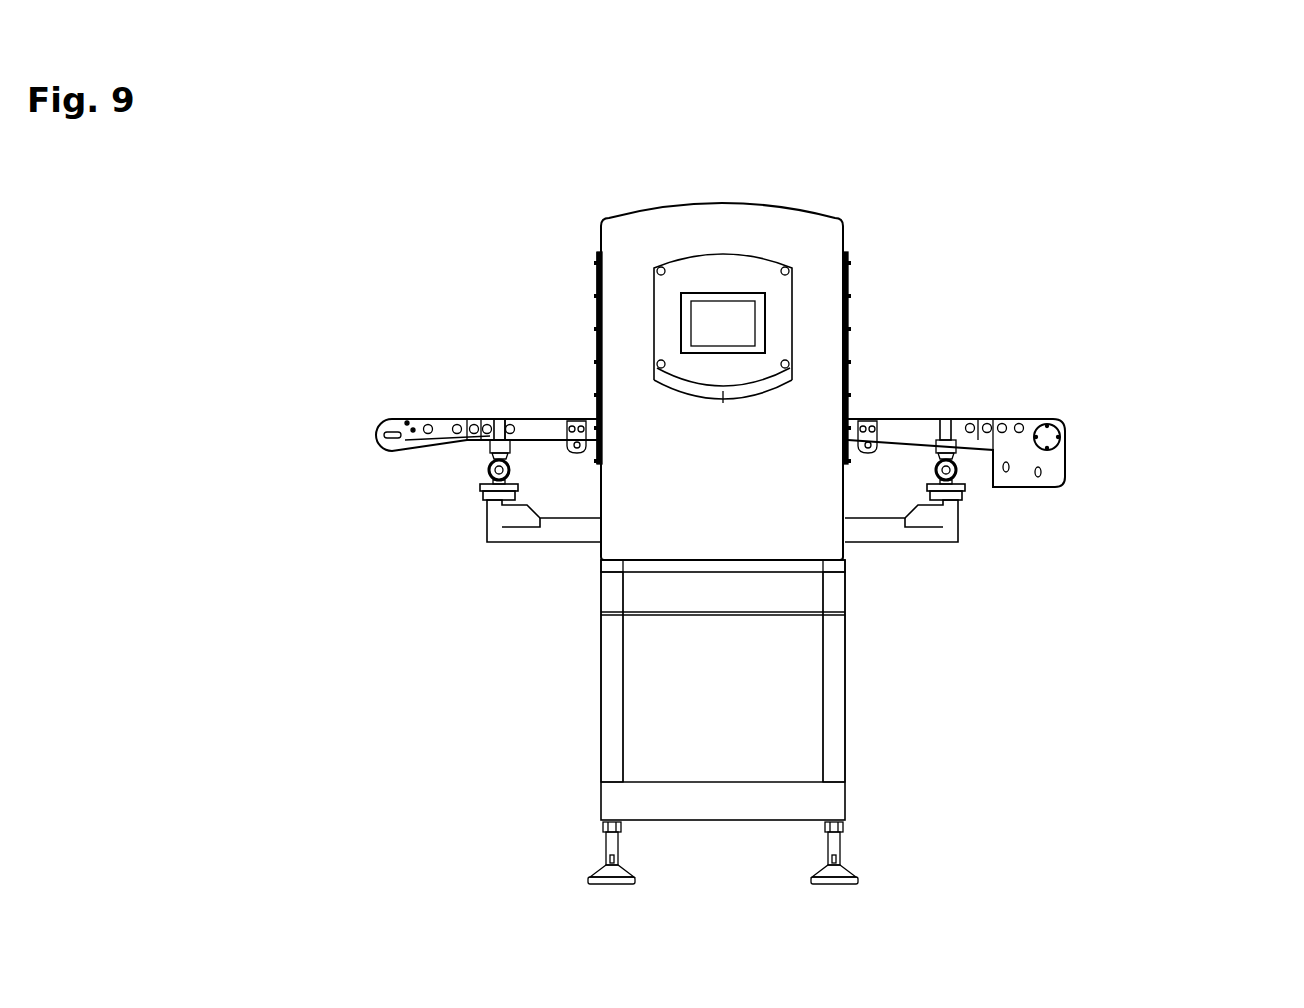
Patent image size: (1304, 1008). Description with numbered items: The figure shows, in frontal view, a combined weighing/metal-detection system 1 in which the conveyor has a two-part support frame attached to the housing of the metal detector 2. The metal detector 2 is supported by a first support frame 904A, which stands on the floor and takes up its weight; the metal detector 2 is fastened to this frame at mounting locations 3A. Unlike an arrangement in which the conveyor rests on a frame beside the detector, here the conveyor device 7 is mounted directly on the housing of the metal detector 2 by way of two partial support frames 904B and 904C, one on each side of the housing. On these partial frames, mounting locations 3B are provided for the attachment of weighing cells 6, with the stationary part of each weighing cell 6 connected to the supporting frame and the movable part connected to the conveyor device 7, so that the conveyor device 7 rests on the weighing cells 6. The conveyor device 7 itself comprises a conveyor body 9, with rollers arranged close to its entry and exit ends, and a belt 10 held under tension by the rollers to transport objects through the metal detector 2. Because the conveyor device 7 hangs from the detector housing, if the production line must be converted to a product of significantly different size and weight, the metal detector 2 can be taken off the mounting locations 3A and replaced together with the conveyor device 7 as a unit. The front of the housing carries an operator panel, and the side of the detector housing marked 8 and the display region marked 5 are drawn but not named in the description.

The combined weighing/metal-detection system 1 is at (1122, 184).
The metal detector 2 is at (690, 182).
The mounting locations 3A is at (613, 565).
The mounting locations 3B is at (476, 502).
The control panel / display 5 is at (797, 288).
The weighing cells 6 is at (474, 465).
The conveyor device 7 is at (349, 411).
The inspection tunnel side 8 is at (573, 327).
The conveyor body 9 is at (538, 426).
The belt 10 is at (441, 452).
The first support frame 904A is at (846, 696).
The partial support frame 904B is at (523, 542).
The partial support frame 904C is at (951, 544).